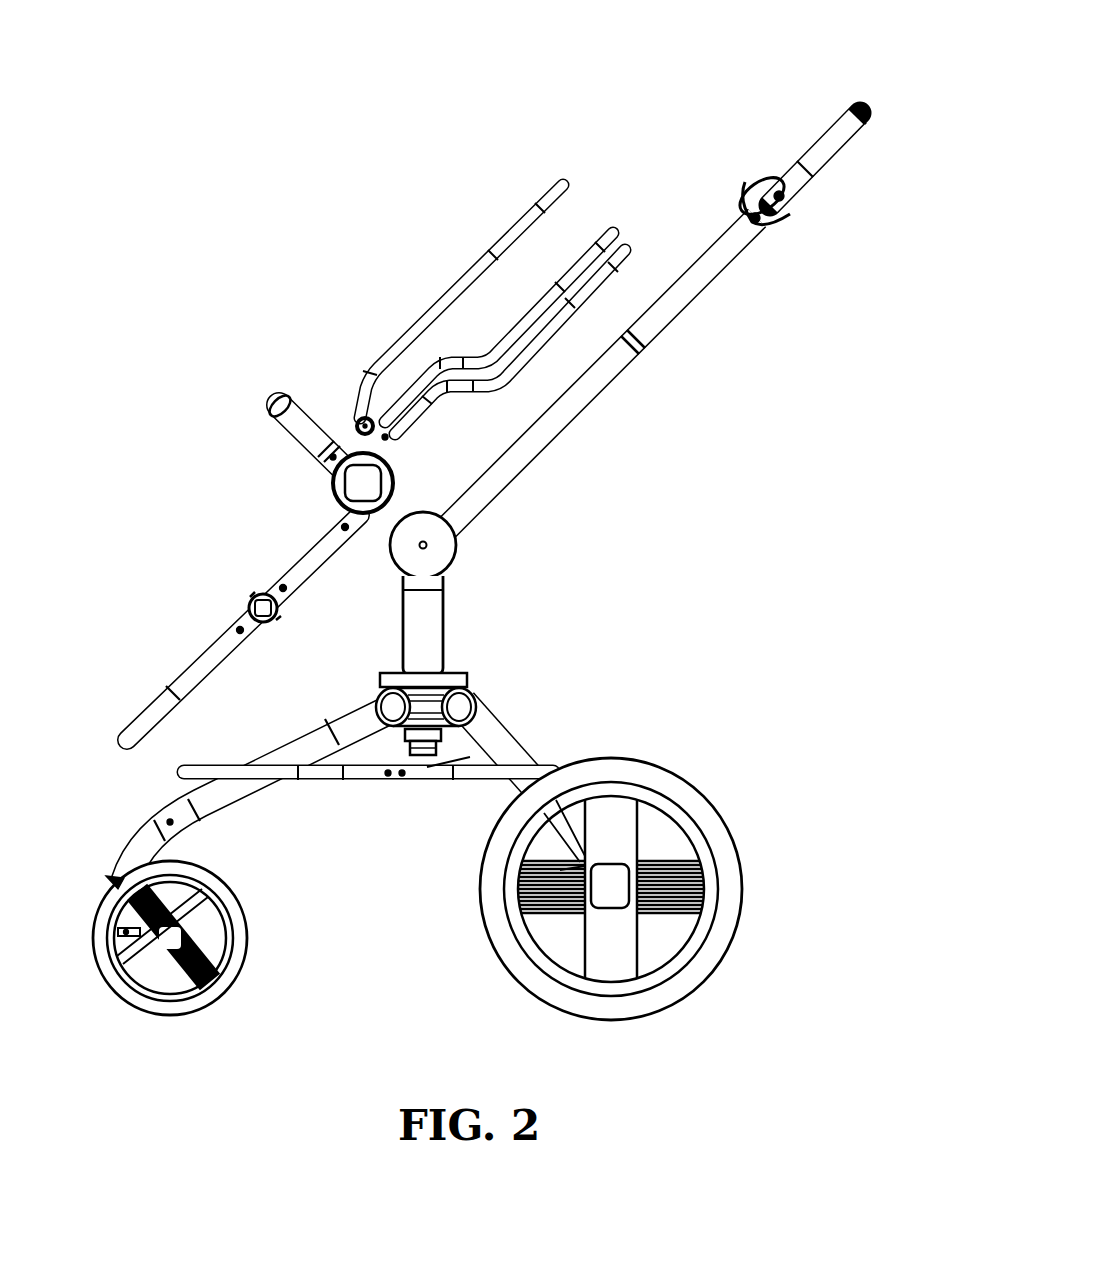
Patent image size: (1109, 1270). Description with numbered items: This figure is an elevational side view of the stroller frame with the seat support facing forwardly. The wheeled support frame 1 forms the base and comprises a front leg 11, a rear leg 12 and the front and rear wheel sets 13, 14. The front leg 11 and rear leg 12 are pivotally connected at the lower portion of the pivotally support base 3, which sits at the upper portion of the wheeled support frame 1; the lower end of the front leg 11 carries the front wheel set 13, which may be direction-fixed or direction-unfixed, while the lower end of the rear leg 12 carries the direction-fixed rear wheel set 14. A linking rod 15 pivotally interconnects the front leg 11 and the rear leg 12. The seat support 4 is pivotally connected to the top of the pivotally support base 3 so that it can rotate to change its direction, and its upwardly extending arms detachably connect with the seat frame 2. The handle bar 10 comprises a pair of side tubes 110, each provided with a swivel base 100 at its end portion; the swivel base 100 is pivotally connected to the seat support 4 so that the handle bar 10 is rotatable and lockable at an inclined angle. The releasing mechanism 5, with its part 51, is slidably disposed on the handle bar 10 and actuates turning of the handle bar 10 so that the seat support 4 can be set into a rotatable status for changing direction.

The wheeled support frame 1 is at (407, 766).
The seat frame 2 is at (300, 512).
The pivotally support base 3 is at (460, 680).
The seat support 4 is at (403, 657).
The releasing mechanism 5 is at (828, 210).
The handle bar 10 is at (627, 373).
The front leg 11 is at (210, 813).
The rear leg 12 is at (500, 733).
The front wheel set 13 is at (220, 978).
The rear wheel set 14 is at (732, 890).
The linking rod 15 is at (357, 775).
The handle joint 51 is at (793, 229).
The swivel base 100 is at (447, 553).
The side tube 110 is at (663, 315).